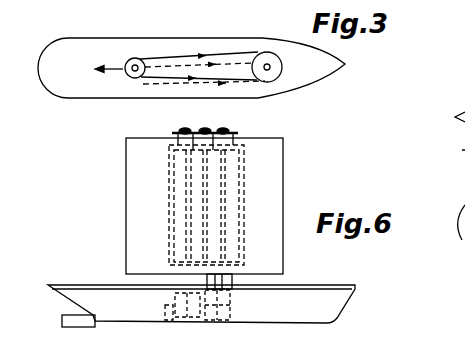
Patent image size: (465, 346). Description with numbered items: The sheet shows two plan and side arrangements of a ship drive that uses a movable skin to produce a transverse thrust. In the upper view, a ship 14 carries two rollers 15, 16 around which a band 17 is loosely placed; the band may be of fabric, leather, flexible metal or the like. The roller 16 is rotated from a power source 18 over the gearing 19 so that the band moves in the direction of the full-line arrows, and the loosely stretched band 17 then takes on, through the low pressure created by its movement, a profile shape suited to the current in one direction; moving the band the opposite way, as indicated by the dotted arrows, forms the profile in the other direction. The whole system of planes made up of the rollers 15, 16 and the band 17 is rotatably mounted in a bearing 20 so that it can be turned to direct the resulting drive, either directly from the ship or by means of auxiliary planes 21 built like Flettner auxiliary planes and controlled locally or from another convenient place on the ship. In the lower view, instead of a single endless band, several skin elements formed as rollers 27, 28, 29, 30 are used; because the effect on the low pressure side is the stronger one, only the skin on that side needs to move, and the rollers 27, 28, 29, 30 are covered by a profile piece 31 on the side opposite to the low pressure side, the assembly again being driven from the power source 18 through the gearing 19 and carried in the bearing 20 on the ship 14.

In FIG. 3, the ship 14 is at (191, 68).
In FIG. 6, the ship 14 is at (140, 317).
In FIG. 3, the roller 15 is at (138, 63).
In FIG. 3, the roller 16 is at (262, 62).
In FIG. 3, the band 17 is at (205, 48).
In FIG. 3, the auxiliary planes 21 is at (102, 68).
In FIG. 6, the power source 18 is at (198, 311).
In FIG. 6, the gearing 19 is at (230, 315).
In FIG. 6, the bearing 20 is at (232, 284).
In FIG. 6, the roller 27 is at (178, 191).
In FIG. 6, the roller 28 is at (190, 226).
In FIG. 6, the roller 29 is at (226, 180).
In FIG. 6, the roller 30 is at (238, 218).
In FIG. 6, the profile piece 31 is at (141, 252).